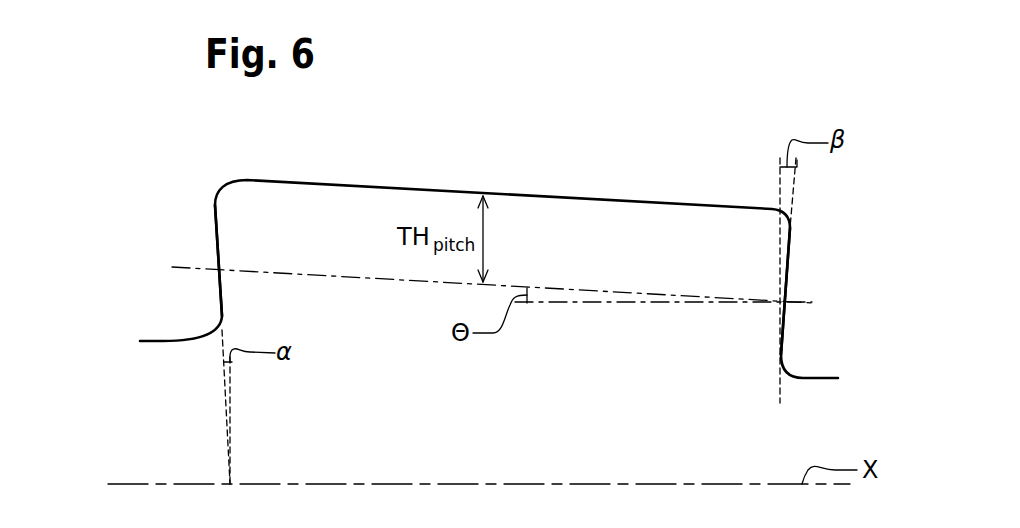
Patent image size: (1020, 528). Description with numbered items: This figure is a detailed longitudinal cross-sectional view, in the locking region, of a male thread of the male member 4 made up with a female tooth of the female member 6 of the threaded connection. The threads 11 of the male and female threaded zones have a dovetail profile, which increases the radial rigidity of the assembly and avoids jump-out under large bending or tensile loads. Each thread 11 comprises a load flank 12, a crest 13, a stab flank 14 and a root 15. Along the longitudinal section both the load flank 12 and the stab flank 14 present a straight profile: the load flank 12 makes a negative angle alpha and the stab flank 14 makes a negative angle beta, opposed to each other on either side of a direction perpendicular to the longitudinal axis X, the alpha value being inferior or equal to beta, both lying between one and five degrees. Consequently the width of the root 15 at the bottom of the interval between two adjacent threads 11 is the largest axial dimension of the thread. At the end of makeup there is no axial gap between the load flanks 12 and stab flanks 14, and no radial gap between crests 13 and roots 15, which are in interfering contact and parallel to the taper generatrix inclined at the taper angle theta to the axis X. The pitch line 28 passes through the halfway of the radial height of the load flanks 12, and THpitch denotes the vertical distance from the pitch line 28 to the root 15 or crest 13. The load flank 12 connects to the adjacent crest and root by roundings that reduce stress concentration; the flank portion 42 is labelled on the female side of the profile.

The female member 6 is at (182, 182).
The male member 4 is at (385, 337).
The thread 11 is at (133, 247).
The load flank 12 is at (214, 250).
The crest 13 is at (380, 188).
The stab flank 14 is at (779, 273).
The root 15 is at (403, 187).
The pitch line 28 is at (587, 290).
The flank portion 42 is at (783, 322).